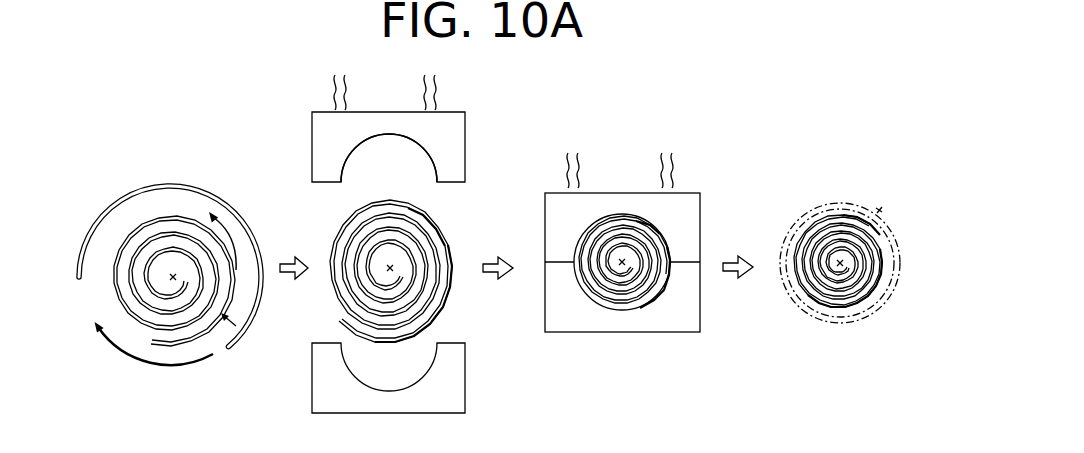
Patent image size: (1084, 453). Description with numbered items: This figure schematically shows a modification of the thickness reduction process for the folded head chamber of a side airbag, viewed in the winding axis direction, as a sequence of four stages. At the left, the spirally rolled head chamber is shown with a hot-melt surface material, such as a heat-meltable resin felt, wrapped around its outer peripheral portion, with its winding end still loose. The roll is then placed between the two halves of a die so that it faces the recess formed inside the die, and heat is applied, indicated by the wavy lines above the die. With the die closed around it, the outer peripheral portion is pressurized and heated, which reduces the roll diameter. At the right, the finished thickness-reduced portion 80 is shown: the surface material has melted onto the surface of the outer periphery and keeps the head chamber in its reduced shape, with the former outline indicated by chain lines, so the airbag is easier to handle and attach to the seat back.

The thickness-reduced portion 80 is at (893, 218).